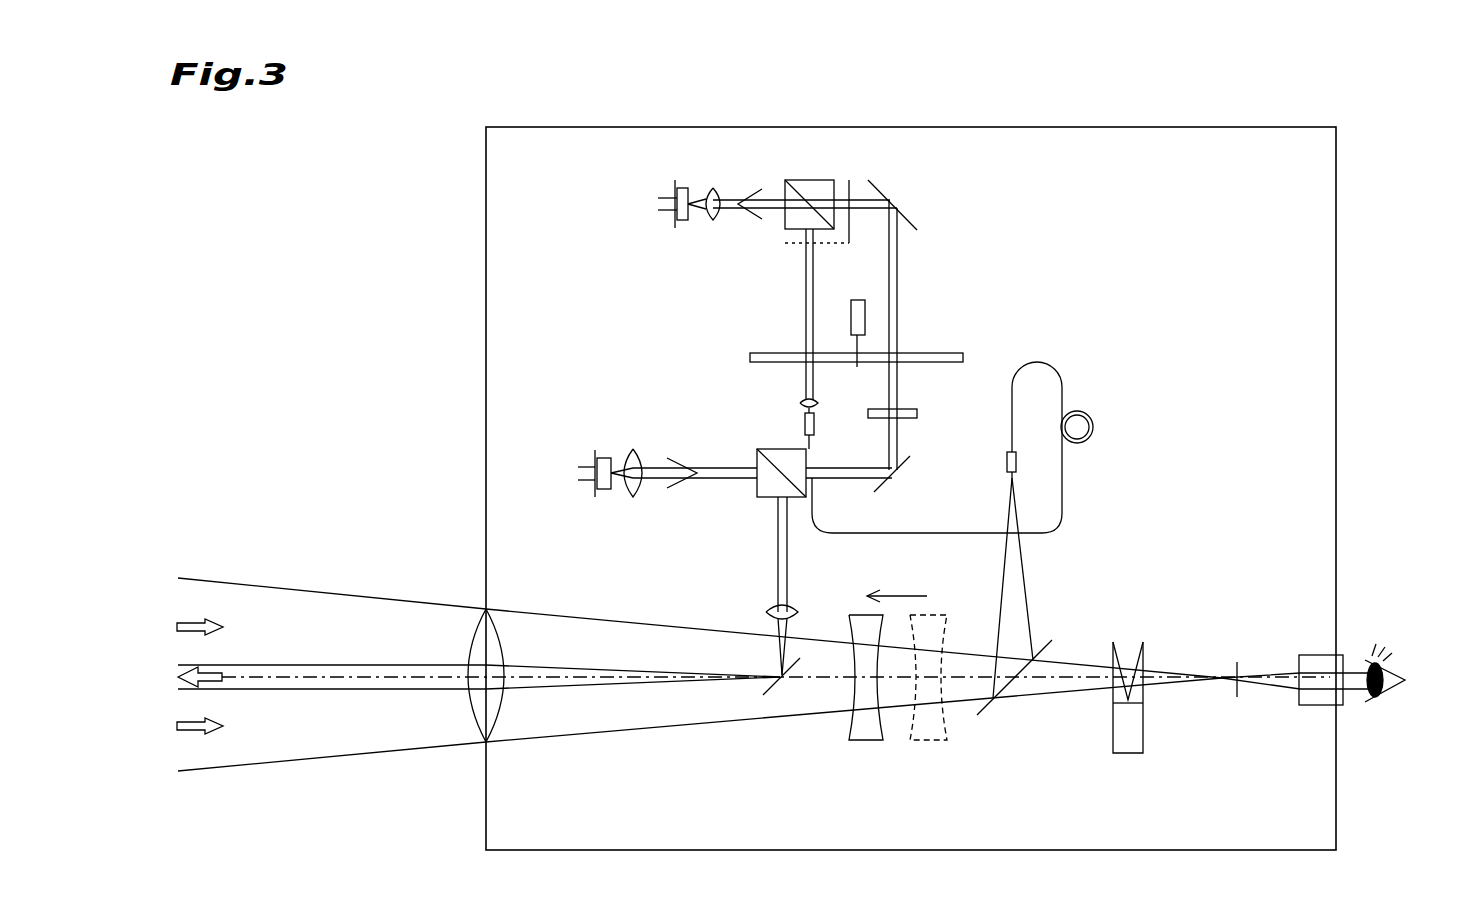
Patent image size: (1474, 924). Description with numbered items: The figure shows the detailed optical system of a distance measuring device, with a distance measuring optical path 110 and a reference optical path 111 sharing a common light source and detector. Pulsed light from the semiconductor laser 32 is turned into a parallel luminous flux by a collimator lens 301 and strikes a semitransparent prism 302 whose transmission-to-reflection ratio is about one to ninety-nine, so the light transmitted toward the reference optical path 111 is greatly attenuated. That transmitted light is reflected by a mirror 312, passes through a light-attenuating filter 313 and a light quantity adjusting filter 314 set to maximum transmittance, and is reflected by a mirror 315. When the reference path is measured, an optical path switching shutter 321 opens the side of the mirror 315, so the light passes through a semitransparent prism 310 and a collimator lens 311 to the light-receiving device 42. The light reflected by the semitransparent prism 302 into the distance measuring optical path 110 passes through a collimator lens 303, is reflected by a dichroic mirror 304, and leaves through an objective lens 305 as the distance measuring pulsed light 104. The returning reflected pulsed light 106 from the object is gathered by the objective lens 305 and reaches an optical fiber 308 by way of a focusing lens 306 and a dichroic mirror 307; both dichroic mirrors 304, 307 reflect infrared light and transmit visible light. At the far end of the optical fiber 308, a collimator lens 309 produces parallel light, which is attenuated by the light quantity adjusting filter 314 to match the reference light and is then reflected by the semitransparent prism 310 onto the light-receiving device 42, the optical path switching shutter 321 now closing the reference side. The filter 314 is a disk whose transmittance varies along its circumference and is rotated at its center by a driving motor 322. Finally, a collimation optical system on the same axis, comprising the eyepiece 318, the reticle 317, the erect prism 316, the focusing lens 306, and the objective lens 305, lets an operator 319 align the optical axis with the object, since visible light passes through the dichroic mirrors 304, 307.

The semiconductor laser 32 is at (603, 491).
The light-receiving device 42 is at (680, 186).
The distance measuring pulsed light 104 is at (724, 679).
The returning reflected pulsed light 106 is at (743, 674).
The distance measuring optical path 110 is at (778, 545).
The reference optical path 111 is at (900, 290).
The collimator lens 301 is at (632, 449).
The semitransparent prism 302 is at (770, 449).
The collimator lens 303 is at (779, 607).
The dichroic mirror 304 is at (780, 682).
The objective lens 305 is at (475, 727).
The focusing lens 306 is at (868, 742).
The dichroic mirror 307 is at (1013, 693).
The optical fiber 308 is at (1063, 497).
The collimator lens 309 is at (803, 402).
The semitransparent prism 310 is at (810, 180).
The collimator lens 311 is at (710, 222).
The mirror 312 is at (895, 476).
The light-attenuating filter 313 is at (918, 409).
The light quantity adjusting filter 314 is at (957, 352).
The mirror 315 is at (918, 226).
The erect prism 316 is at (1128, 755).
The reticle 317 is at (1240, 700).
The eyepiece 318 is at (1337, 707).
The operator 319 is at (1395, 692).
The optical path switching shutter 321 is at (851, 182).
The driving motor 322 is at (857, 300).